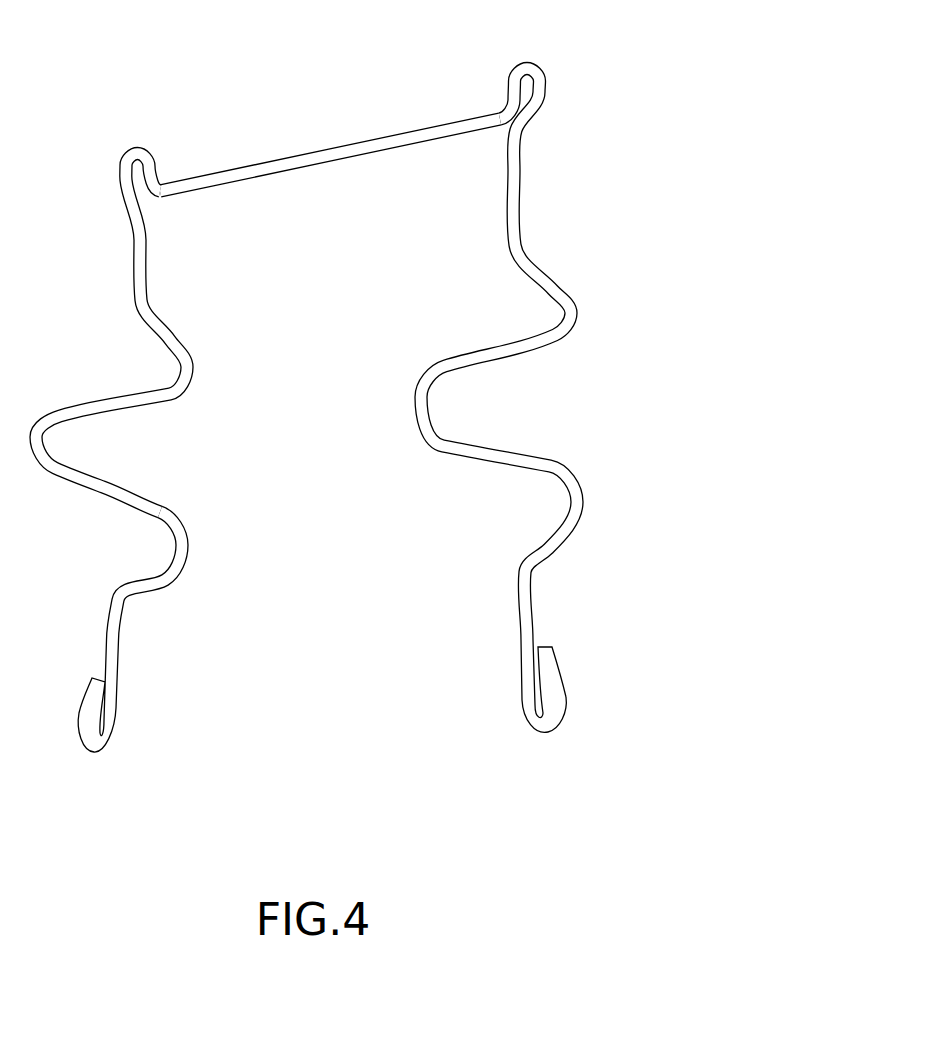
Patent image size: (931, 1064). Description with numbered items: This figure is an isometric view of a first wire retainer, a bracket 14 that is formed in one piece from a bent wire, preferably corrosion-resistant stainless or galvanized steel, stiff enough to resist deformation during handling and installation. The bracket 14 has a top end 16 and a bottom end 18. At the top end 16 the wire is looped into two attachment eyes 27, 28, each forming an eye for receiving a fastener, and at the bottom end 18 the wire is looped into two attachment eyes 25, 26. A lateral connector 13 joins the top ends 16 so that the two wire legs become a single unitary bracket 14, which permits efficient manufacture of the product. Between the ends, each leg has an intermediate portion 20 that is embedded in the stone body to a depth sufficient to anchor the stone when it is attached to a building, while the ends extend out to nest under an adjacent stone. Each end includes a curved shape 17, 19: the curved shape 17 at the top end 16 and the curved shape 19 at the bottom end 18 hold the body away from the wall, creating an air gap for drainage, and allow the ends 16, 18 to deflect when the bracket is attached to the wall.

The lateral connector 13 is at (314, 152).
The bracket 14 is at (103, 298).
The top end 16 is at (537, 62).
The curved shape 17 is at (152, 310).
The bottom end 18 is at (538, 735).
The curved shape 19 is at (160, 588).
The intermediate portion 20 is at (403, 368).
The attachment eye 25 is at (118, 715).
The attachment eye 26 is at (515, 686).
The attachment eye 27 is at (120, 160).
The attachment eye 28 is at (543, 98).